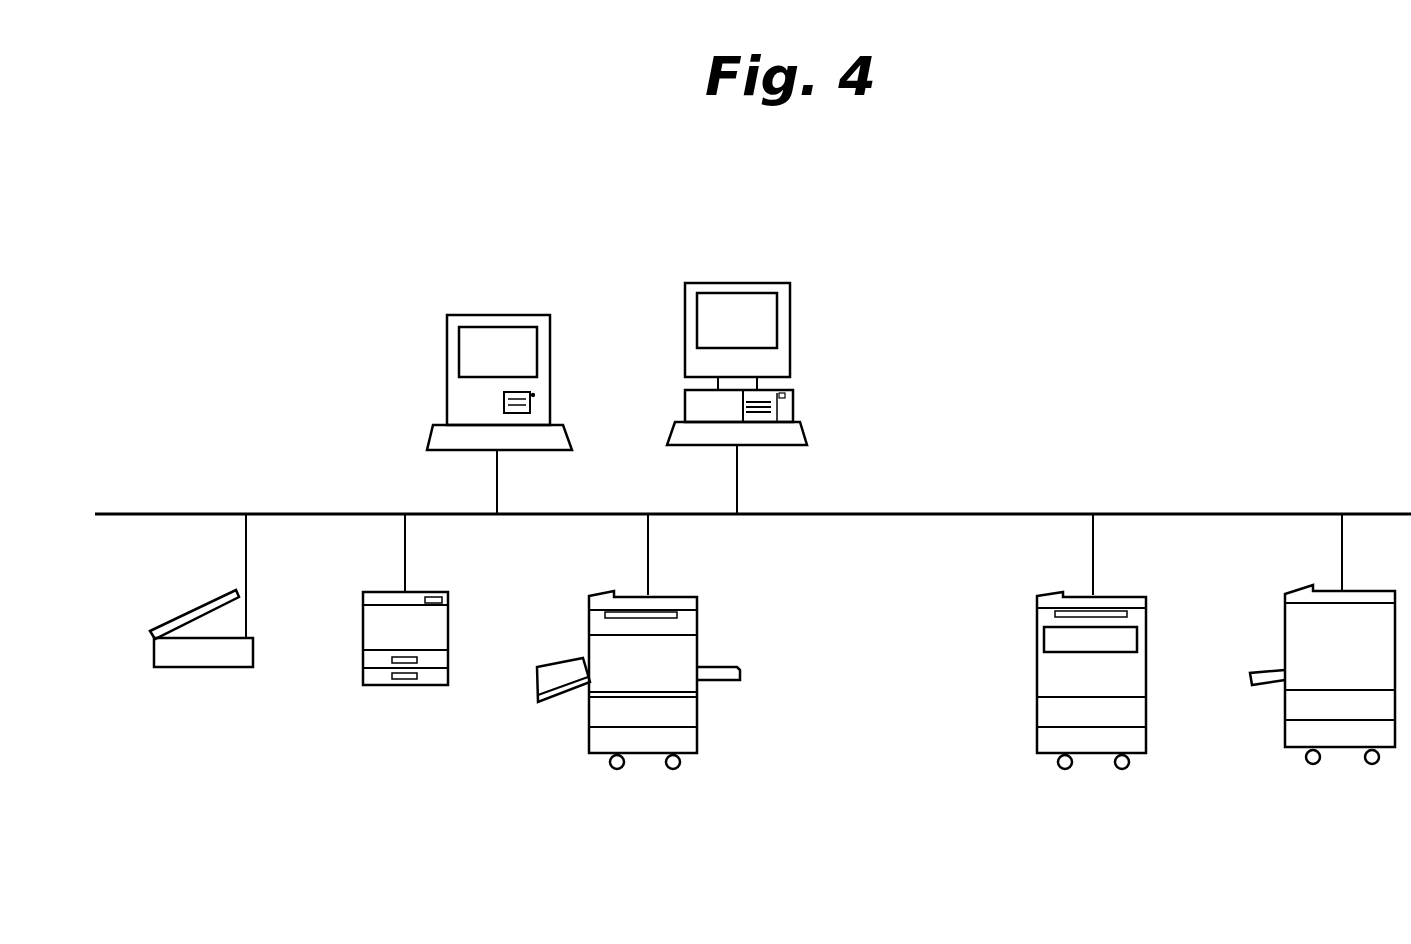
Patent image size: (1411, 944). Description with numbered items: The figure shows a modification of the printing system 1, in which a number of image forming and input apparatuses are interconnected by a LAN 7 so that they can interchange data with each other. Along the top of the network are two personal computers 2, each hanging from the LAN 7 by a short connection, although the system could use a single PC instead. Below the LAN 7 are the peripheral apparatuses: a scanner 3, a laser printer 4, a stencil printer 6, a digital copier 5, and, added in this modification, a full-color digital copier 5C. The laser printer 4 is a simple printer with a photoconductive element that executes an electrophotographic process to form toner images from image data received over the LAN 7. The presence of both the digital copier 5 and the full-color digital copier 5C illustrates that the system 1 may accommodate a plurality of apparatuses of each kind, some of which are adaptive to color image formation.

The printing system 1 is at (941, 346).
The personal computers 2 is at (491, 314).
The scanner 3 is at (203, 668).
The laser printer 4 is at (408, 687).
The digital copier 5 is at (1092, 757).
The full-color digital copier 5C is at (1342, 752).
The stencil printer 6 is at (645, 757).
The LAN 7 is at (285, 514).